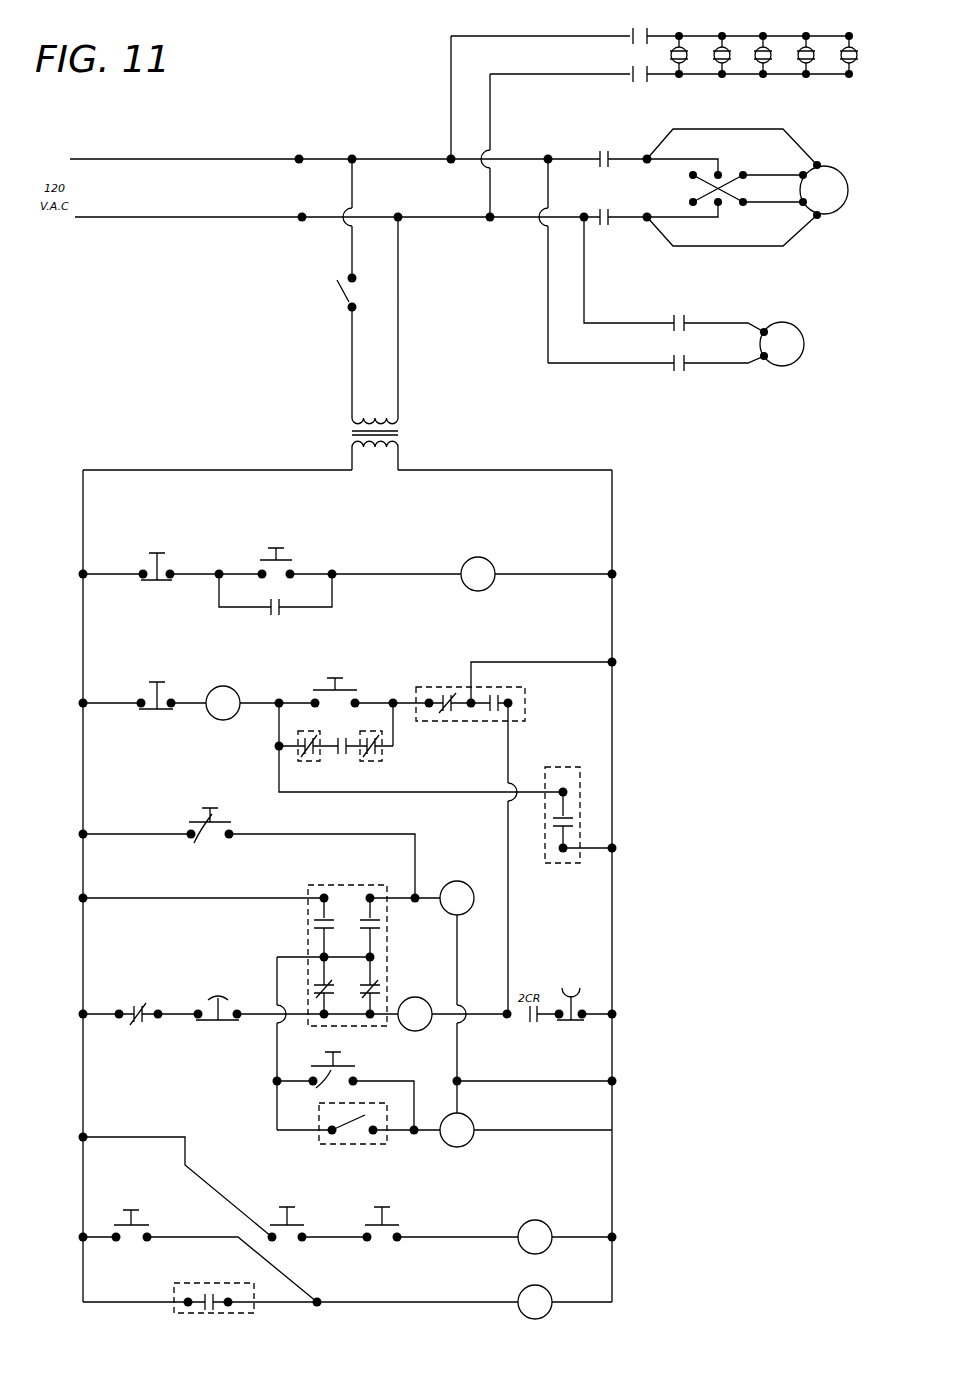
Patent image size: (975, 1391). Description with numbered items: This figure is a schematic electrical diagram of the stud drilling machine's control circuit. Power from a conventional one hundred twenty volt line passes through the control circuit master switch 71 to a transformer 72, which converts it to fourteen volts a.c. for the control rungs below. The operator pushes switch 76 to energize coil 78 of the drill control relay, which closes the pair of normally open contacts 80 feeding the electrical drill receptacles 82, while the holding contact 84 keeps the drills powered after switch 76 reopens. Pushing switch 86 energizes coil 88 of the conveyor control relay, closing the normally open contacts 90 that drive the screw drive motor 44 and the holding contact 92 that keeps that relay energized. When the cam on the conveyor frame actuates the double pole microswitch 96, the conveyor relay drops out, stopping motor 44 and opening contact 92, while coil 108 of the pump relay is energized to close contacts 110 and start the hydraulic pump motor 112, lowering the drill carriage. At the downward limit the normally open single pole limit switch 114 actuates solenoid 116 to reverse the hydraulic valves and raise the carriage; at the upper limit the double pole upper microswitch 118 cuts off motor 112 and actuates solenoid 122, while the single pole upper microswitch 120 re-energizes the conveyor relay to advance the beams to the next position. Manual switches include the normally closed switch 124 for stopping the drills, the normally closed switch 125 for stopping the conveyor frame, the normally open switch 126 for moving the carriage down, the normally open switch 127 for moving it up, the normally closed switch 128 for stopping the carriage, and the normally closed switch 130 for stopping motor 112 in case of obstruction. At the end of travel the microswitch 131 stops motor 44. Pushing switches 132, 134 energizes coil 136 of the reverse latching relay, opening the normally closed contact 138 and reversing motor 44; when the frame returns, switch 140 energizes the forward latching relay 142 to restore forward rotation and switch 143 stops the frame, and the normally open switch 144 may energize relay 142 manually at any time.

The motor 44 is at (835, 182).
The control circuit master switch 71 is at (346, 300).
The transformer 72 is at (400, 434).
The switch 76 is at (262, 558).
The coil 78 is at (495, 563).
The normally open contacts 80 is at (628, 72).
The electrical drill receptacles 82 is at (728, 62).
The normally open contact 84 is at (256, 608).
The switch 86 is at (324, 690).
The coil 88 is at (238, 691).
The normally open contacts 90 is at (600, 210).
The normally open contact 92 is at (350, 738).
The double pole microswitch 96 is at (444, 686).
The coil 108 is at (412, 998).
The normally open contacts 110 is at (652, 364).
The motor 112 is at (800, 334).
The normally open single pole limit switch 114 is at (352, 1112).
The solenoid 116 is at (469, 1122).
The double pole upper microswitch 118 is at (302, 947).
The single pole upper microswitch 120 is at (580, 806).
The solenoid 122 is at (461, 893).
The normally closed switch 124 is at (148, 570).
The normally closed switch 125 is at (160, 702).
The normally open switch 126 is at (206, 827).
The normally open switch 127 is at (331, 1077).
The normally closed switch 128 is at (206, 1008).
The normally closed switch 130 is at (572, 1025).
The microswitch 131 is at (296, 746).
The switch 132 is at (290, 1243).
The switch 134 is at (388, 1243).
The coil 136 is at (548, 1226).
The normally closed contact 138 is at (150, 991).
The switch 140 is at (167, 1295).
The forward latching relay 142 is at (549, 1291).
The switch 143 is at (380, 758).
The normally open switch 144 is at (146, 1222).